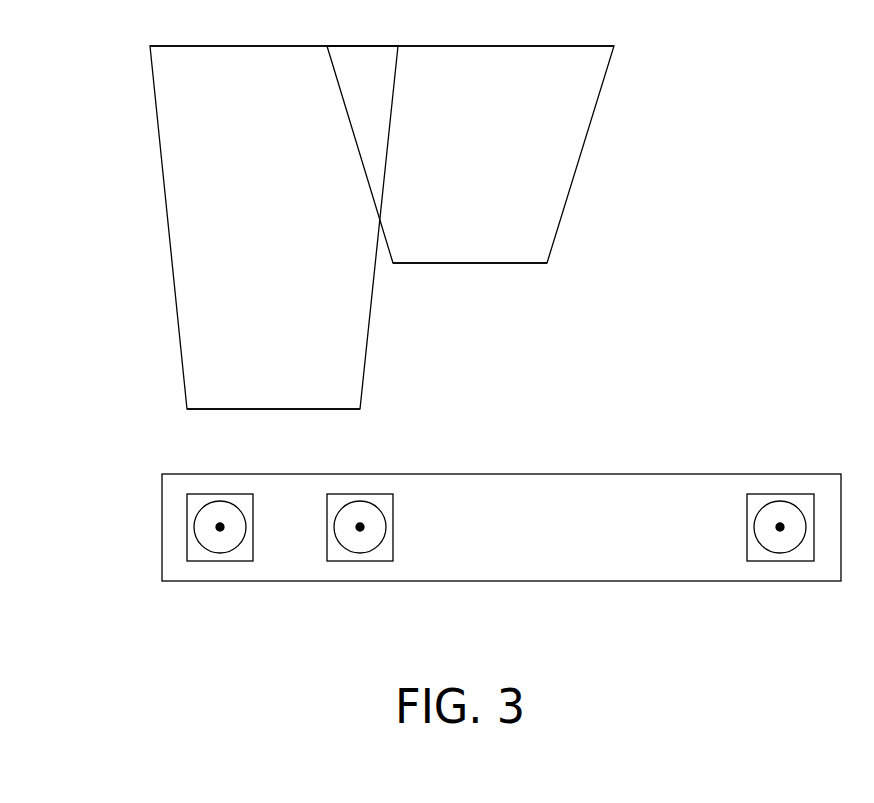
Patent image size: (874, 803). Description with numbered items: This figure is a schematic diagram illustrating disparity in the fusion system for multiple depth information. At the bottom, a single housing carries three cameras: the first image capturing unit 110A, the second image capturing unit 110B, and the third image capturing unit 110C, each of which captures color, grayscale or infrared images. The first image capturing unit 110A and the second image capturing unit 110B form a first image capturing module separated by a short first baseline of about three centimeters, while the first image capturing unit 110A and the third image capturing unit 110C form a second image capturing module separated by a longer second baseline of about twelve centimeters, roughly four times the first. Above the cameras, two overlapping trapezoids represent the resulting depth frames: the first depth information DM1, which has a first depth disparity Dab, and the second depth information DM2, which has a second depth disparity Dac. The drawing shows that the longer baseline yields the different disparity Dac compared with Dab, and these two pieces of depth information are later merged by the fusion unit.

The first image capturing unit 110A is at (380, 561).
The second image capturing unit 110B is at (202, 561).
The third image capturing unit 110C is at (747, 545).
The first depth information DM1 is at (274, 227).
The second depth information DM2 is at (470, 154).
The first depth disparity Dab is at (187, 409).
The second depth disparity Dac is at (547, 263).